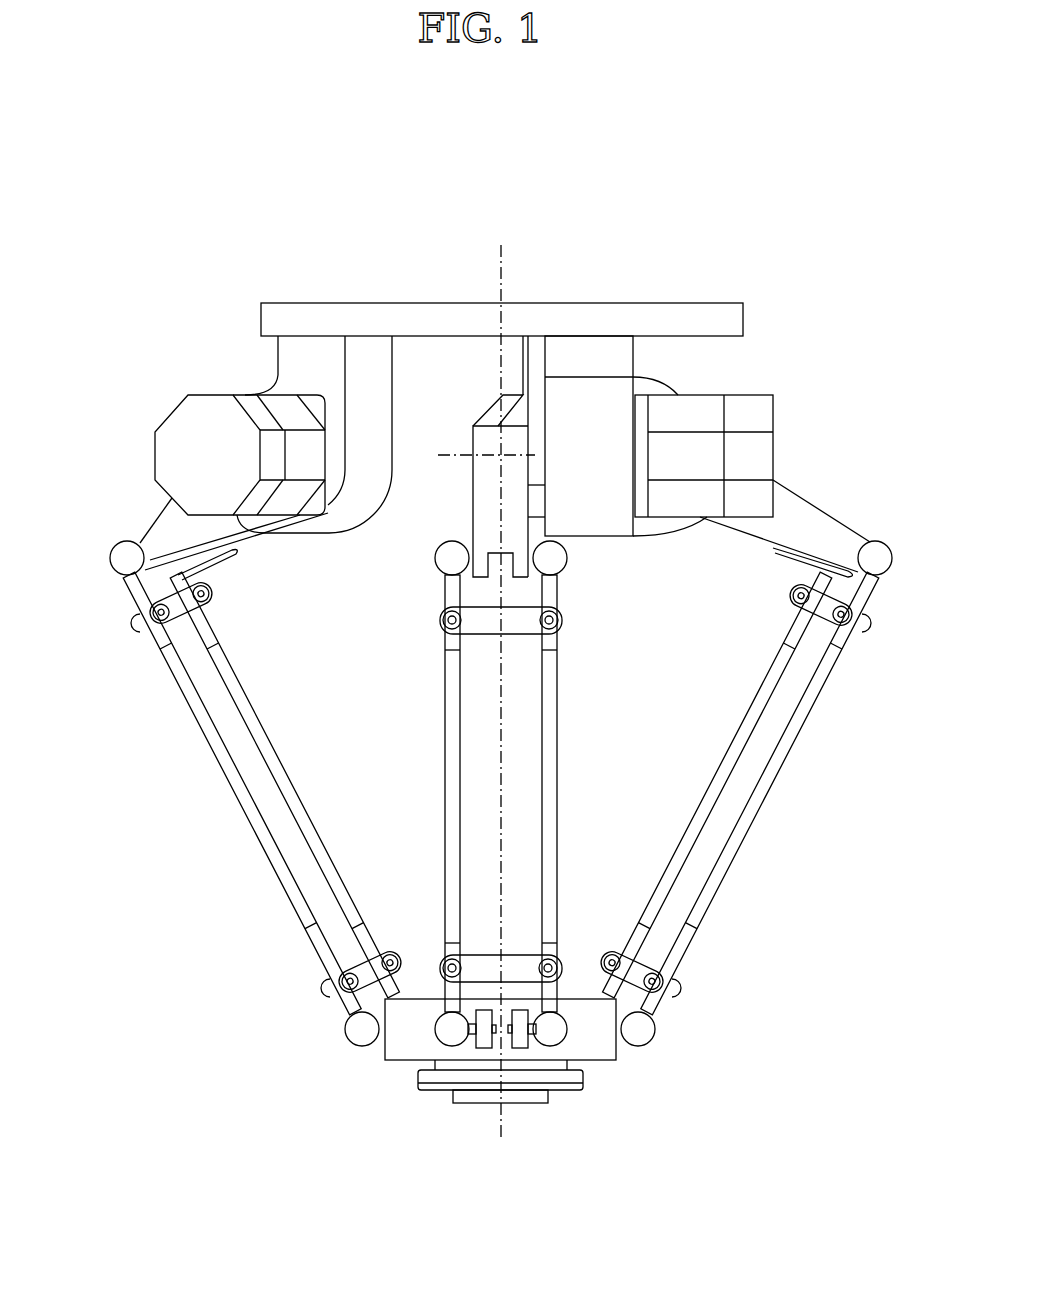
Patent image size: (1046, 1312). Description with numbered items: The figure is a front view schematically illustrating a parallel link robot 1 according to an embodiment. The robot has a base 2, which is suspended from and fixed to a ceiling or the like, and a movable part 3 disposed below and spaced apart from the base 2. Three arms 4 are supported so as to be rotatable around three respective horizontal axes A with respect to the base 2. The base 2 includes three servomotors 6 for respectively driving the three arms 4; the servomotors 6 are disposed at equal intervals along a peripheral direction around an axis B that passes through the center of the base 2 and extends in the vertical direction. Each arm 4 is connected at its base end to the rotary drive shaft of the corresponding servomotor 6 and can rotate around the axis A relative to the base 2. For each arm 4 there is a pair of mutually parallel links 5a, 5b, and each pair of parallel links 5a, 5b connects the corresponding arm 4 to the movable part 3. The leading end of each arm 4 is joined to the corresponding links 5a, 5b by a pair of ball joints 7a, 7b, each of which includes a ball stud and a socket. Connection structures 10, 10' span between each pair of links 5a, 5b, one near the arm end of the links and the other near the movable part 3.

The parallel link robot 1 is at (772, 221).
The base 2 is at (611, 303).
The movable part 3 is at (601, 1080).
The arm 4 is at (152, 530).
The link 5a is at (291, 770).
The link 5b is at (237, 797).
The servomotor 6 is at (200, 393).
The ball joint 7a is at (567, 559).
The ball joint 7b is at (112, 546).
The connection structure 10 is at (490, 664).
The connection structure 10' is at (505, 921).
The horizontal axis A is at (475, 458).
The axis B is at (502, 676).